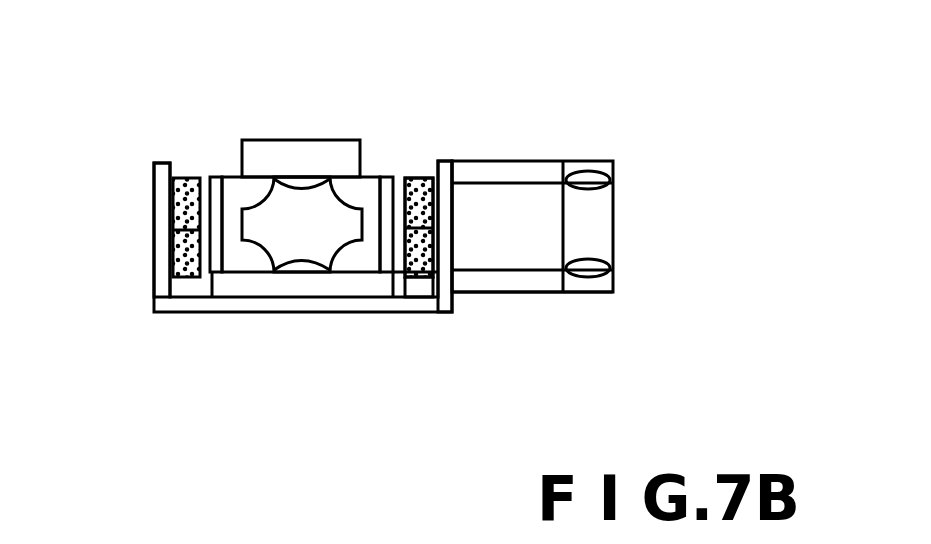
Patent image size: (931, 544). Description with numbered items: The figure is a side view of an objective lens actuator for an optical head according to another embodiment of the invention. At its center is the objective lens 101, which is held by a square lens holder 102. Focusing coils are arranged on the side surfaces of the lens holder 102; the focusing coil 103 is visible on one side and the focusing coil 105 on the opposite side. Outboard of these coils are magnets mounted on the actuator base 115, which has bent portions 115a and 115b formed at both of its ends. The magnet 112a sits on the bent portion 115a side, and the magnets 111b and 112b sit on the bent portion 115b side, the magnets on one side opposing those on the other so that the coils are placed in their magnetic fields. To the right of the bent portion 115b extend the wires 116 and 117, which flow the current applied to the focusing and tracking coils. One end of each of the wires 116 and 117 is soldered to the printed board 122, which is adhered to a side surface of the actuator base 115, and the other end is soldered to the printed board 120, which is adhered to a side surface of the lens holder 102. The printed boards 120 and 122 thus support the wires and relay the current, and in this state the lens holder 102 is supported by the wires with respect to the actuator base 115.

The objective lens 101 is at (312, 140).
The lens holder 102 is at (253, 273).
The focusing coil 103 is at (218, 273).
The focusing coil 105 is at (382, 272).
The magnet 111b is at (412, 178).
The magnet 112a is at (178, 258).
The magnet 112b is at (414, 290).
The actuator base 115 is at (183, 312).
The bent portion 115a is at (154, 202).
The bent portion 115b is at (445, 228).
The wire 116 is at (487, 183).
The wire 117 is at (527, 270).
The printed board 120 is at (265, 193).
The printed board 122 is at (582, 162).